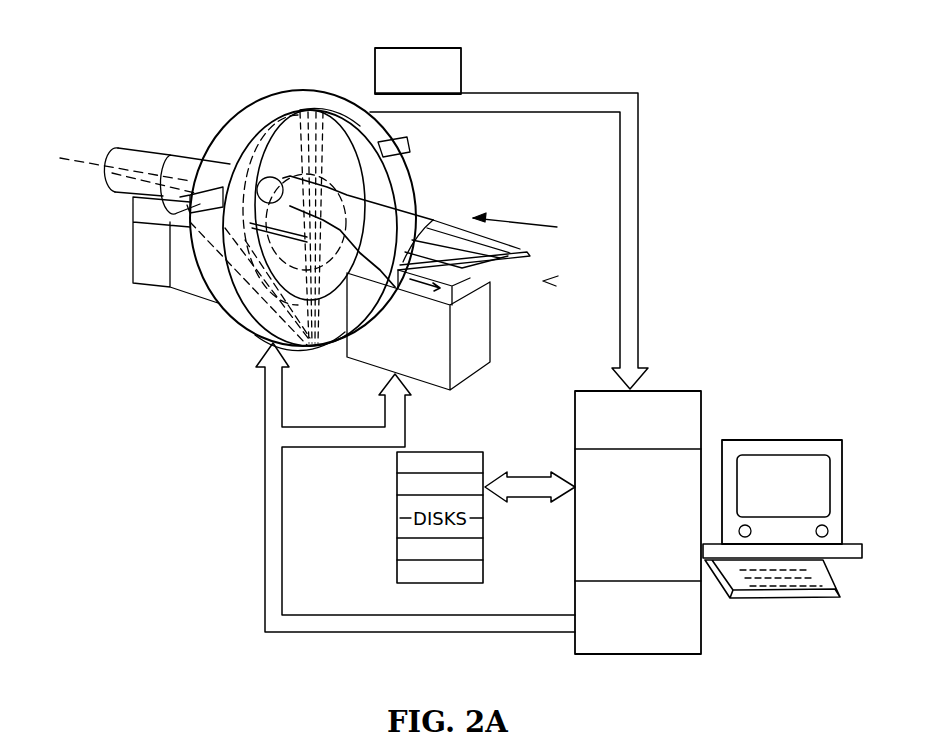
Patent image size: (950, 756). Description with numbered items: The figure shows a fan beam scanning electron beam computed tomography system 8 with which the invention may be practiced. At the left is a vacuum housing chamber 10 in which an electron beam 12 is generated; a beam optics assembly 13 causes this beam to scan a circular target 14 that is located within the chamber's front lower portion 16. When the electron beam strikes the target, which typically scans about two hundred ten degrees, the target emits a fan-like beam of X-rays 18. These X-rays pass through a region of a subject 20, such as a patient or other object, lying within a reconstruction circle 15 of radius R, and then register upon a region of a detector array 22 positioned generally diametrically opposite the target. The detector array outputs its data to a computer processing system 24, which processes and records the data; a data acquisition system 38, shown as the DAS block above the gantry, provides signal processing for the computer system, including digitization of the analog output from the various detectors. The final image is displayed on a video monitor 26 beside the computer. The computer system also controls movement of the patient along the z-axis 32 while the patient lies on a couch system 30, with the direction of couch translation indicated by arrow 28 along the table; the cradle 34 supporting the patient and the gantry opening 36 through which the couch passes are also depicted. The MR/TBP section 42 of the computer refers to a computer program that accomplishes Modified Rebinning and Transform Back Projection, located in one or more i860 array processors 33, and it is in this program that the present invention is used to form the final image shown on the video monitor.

The scanning electron beam computed tomography system 8 is at (490, 62).
The vacuum housing chamber 10 is at (144, 169).
The electron beam 12 is at (140, 175).
The beam optics assembly 13 is at (190, 167).
The circular target 14 is at (293, 340).
The reconstruction circle 15 is at (340, 256).
The front lower portion 16 is at (213, 318).
The fan-like beam of X-rays 18 is at (318, 178).
The subject 20 is at (277, 178).
The detector array 22 is at (337, 110).
The computer processing system 24 is at (660, 318).
The video monitor 26 is at (785, 440).
The table translation direction 28 is at (515, 215).
The couch system 30 is at (473, 323).
The z-axis 32 is at (87, 158).
The i860 array processors 33 is at (775, 602).
The patient cradle 34 is at (240, 237).
The gantry opening 36 is at (417, 173).
The data acquisition system 38 is at (415, 47).
The MR/TBP section 42 is at (672, 390).
The radius R is at (330, 218).